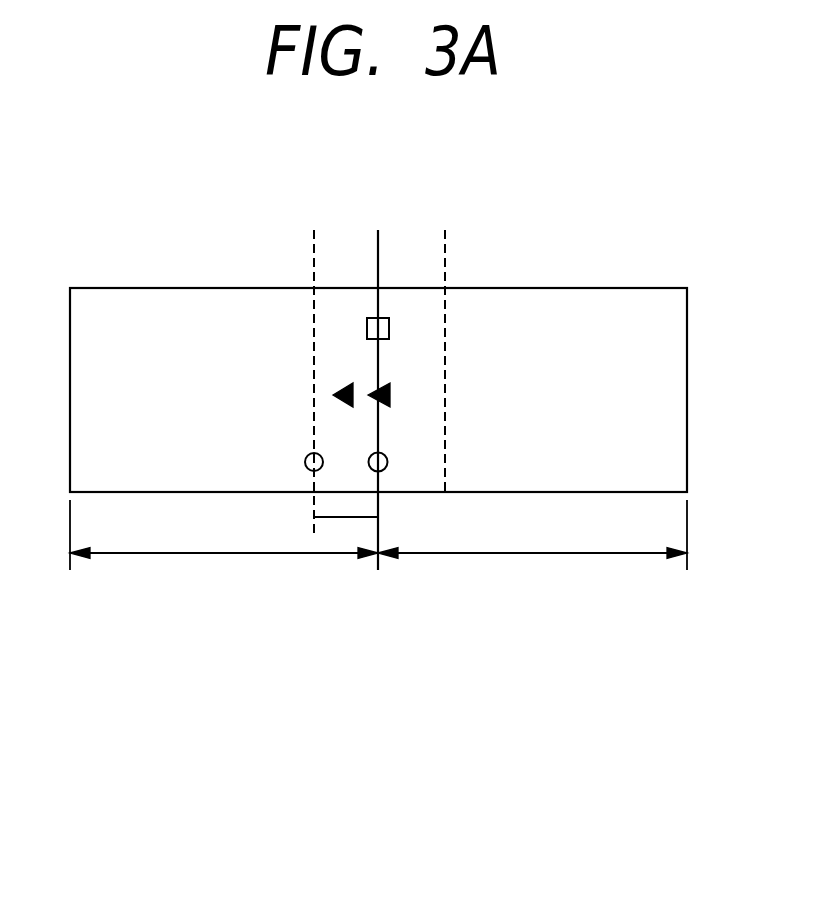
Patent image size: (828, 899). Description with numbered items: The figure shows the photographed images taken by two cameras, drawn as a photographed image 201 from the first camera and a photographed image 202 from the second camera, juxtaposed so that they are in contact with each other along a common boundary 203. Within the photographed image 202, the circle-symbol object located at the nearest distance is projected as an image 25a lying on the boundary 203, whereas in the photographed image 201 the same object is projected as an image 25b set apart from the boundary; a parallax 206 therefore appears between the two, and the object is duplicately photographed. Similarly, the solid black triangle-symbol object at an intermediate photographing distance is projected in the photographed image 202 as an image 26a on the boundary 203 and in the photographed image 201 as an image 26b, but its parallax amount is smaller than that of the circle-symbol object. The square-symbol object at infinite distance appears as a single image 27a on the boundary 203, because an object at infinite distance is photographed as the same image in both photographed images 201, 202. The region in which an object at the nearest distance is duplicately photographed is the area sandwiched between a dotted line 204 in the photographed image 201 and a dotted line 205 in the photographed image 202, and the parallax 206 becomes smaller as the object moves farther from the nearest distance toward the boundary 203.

The photographed image 201 is at (185, 555).
The photographed image 202 is at (542, 555).
The boundary 203 is at (378, 230).
The dotted line 204 is at (313, 230).
The dotted line 205 is at (445, 230).
The parallax 206 is at (343, 518).
The image 25a is at (388, 462).
The image 25b is at (305, 462).
The image 26a is at (390, 396).
The image 26b is at (335, 396).
The image 27a is at (389, 332).